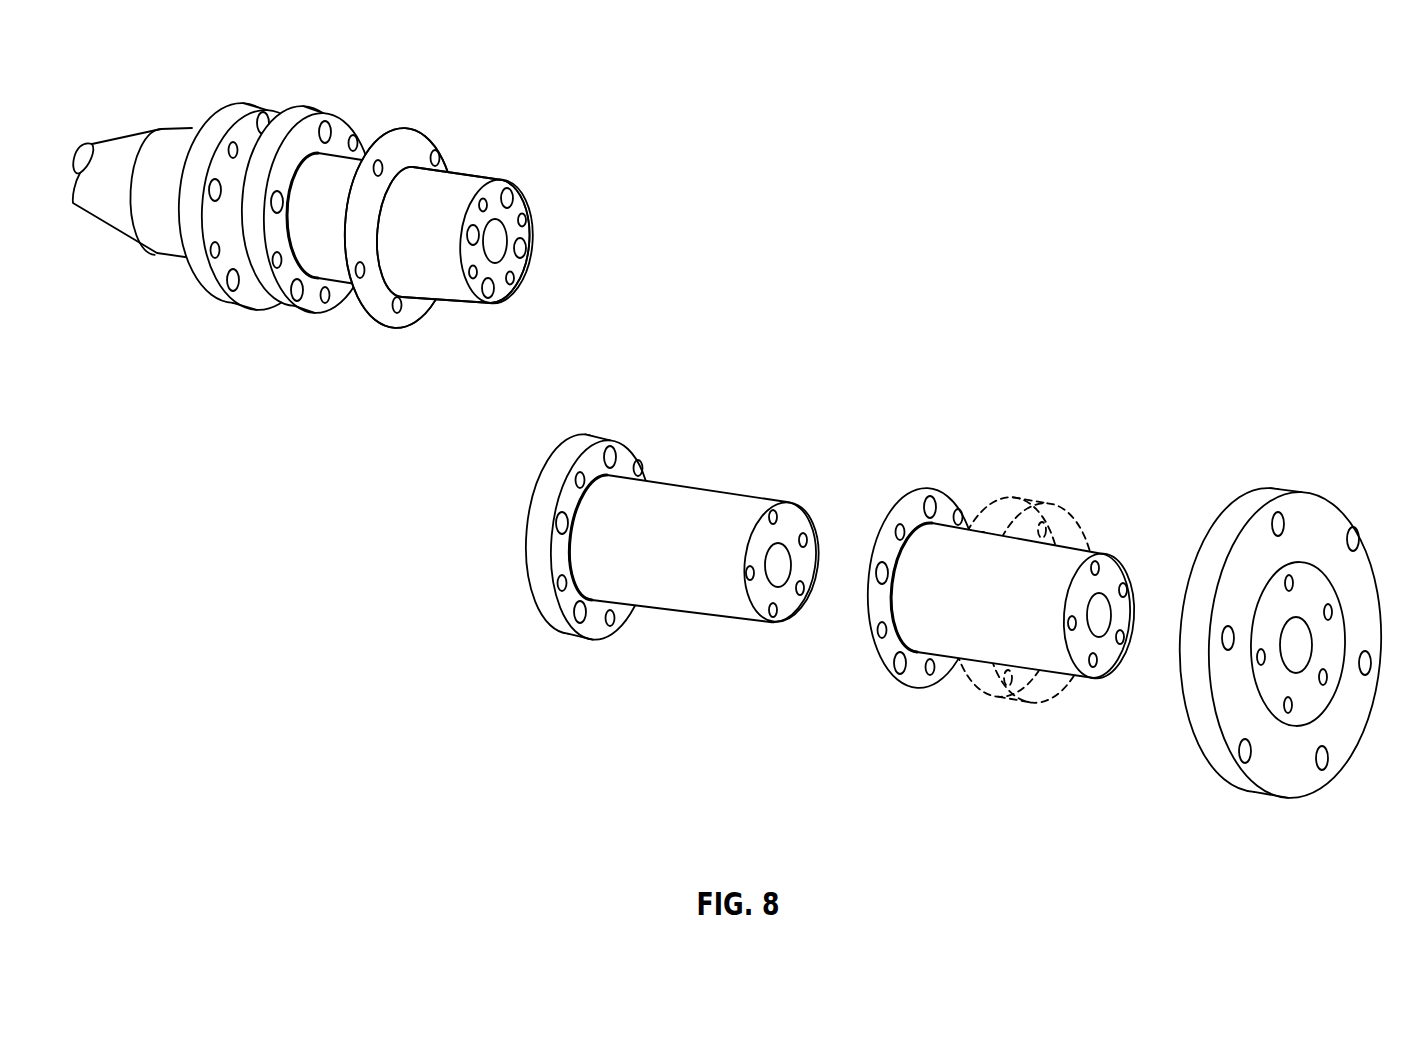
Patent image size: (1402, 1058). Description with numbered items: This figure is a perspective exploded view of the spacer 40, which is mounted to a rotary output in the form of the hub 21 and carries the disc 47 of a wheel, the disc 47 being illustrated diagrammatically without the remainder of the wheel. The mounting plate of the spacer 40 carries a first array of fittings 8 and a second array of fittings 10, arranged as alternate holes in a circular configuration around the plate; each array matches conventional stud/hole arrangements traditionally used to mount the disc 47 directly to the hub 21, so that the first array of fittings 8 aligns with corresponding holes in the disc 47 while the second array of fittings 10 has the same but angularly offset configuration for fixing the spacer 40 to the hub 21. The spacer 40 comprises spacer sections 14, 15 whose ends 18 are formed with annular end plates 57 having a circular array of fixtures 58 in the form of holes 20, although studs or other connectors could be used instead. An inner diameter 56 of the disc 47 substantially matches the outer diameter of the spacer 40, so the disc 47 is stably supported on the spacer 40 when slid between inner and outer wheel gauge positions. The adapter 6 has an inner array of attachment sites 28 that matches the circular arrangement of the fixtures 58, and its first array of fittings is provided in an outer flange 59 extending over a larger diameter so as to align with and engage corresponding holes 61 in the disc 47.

The adapter 6 is at (1267, 620).
The first array of fittings 8 is at (322, 115).
The second array of fittings 10 is at (294, 143).
The spacer section 14 is at (328, 262).
The spacer section 15 is at (440, 285).
The ends 18 is at (498, 187).
The holes 20 is at (527, 222).
The hub 21 is at (195, 128).
The inner array of attachment sites 28 is at (1289, 568).
The spacer 40 is at (470, 185).
The disc 47 is at (721, 392).
The inner diameter 56 is at (388, 153).
The annular end plates 57 is at (513, 203).
The fixtures 58 is at (530, 244).
The outer flange 59 is at (1228, 727).
The holes 61 is at (377, 160).